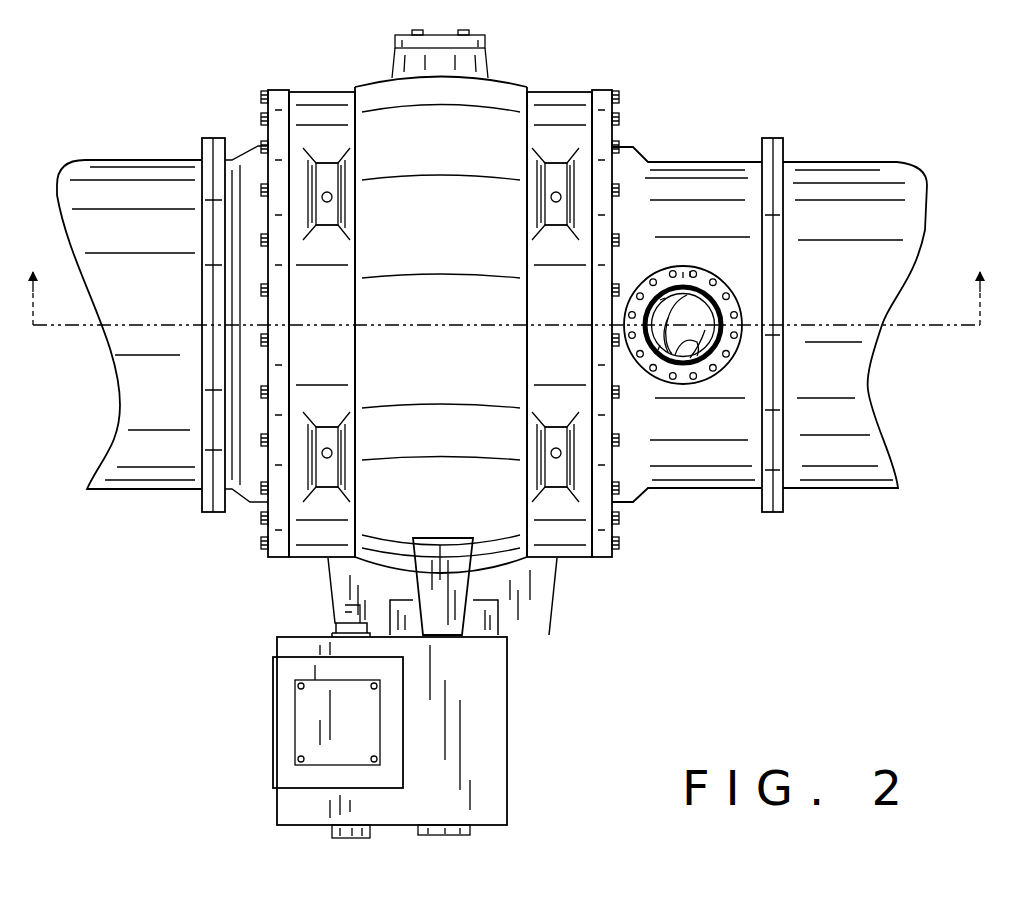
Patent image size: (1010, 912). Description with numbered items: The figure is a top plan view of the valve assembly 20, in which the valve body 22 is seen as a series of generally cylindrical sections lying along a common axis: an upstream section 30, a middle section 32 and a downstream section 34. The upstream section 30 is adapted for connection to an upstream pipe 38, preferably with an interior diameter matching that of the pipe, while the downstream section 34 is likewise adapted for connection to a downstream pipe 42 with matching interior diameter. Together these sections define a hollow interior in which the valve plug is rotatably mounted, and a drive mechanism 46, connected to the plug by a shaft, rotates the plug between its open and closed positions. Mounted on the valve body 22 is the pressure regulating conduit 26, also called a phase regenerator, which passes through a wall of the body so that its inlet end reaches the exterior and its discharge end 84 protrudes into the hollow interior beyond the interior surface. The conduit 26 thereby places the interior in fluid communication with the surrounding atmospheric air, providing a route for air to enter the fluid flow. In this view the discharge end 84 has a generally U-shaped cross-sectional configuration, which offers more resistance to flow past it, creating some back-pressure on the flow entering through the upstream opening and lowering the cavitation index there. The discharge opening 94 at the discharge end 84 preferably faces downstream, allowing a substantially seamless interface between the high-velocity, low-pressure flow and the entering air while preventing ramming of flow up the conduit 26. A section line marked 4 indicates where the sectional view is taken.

The section line 4- 4 is at (506, 277).
The valve assembly 20 is at (604, 67).
The valve body 22 is at (510, 80).
The pressure regulating conduit 26 is at (688, 262).
The upstream section 30 is at (241, 150).
The middle section 32 is at (388, 100).
The downstream section 34 is at (735, 183).
The upstream pipe 38 is at (138, 178).
The downstream pipe 42 is at (833, 185).
The drive mechanism 46 is at (510, 735).
The discharge end 84 is at (652, 385).
The discharge opening 94 is at (700, 385).